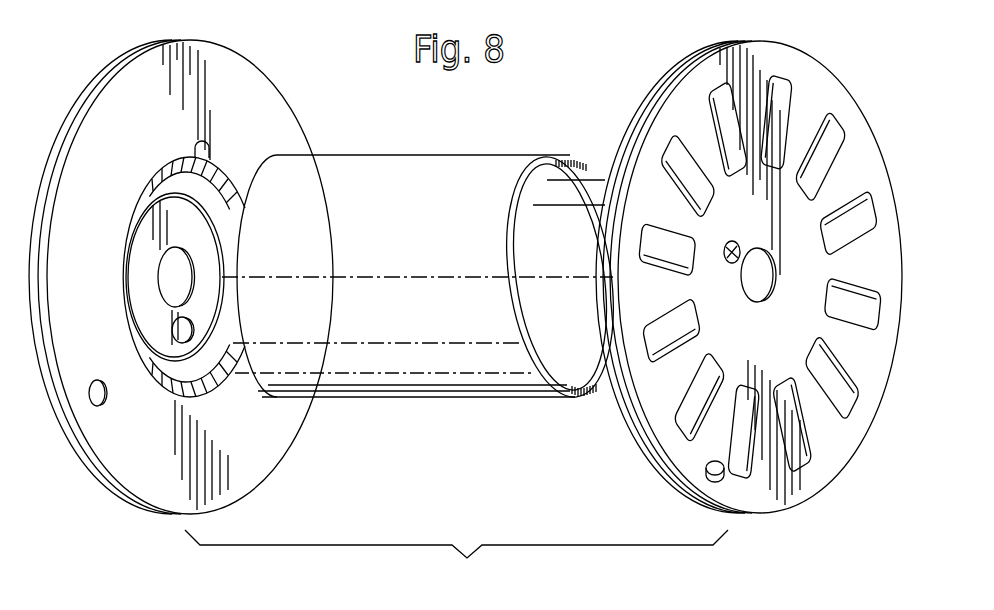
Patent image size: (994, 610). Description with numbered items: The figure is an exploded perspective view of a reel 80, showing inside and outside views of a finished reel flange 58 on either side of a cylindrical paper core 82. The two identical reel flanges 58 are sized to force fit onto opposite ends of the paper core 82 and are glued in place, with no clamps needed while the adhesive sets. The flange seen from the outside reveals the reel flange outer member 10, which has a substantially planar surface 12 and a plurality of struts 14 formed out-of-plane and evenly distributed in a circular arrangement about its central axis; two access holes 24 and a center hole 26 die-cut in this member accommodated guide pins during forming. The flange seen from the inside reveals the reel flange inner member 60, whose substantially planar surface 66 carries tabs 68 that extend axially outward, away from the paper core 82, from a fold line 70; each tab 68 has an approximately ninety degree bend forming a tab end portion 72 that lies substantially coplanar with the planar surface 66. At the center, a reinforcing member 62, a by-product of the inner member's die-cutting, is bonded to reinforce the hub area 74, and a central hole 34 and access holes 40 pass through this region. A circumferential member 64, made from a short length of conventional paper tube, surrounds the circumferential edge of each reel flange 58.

The reel flange outer member 10 is at (84, 83).
The planar surface 12 is at (808, 97).
The strut 14 is at (800, 150).
The access hole 24 is at (730, 245).
The center hole 26 is at (745, 286).
The central hole 34 is at (167, 267).
The access hole 40 is at (97, 405).
The reel flange 58 is at (100, 493).
The reel flange inner member 60 is at (228, 76).
The reinforcing member 62 is at (150, 222).
The circumferential member 64 is at (55, 378).
The planar surface 66 is at (252, 98).
The tab 68 is at (227, 182).
The fold line 70 is at (195, 398).
The tab end portion 72 is at (213, 370).
The hub area 74 is at (162, 185).
The reel 80 is at (456, 556).
The cylindrical paper core 82 is at (520, 153).